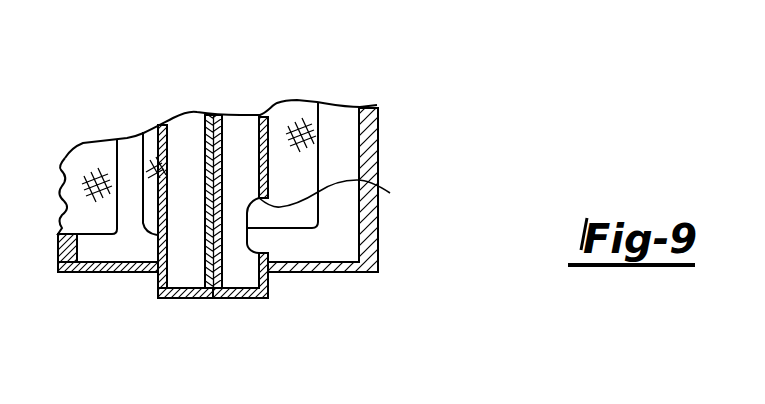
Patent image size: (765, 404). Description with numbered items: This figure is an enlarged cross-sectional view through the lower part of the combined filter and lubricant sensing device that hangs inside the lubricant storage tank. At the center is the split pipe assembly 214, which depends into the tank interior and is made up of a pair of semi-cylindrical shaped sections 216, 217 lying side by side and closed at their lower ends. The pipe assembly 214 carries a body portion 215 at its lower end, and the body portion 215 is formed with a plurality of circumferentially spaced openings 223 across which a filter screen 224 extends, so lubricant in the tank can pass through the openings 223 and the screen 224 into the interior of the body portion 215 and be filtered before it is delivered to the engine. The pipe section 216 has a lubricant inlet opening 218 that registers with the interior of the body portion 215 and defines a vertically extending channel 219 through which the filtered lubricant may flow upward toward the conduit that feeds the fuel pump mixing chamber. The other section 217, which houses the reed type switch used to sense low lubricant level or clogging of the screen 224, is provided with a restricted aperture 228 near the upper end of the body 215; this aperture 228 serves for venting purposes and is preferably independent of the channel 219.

The split pipe assembly 214 is at (268, 287).
The body portion 215 is at (379, 137).
The semi-cylindrical pipe section 216 is at (246, 299).
The semi-cylindrical pipe section 217 is at (188, 299).
The lubricant inlet opening 218 is at (341, 216).
The vertically extending channel 219 is at (239, 131).
The circumferentially spaced openings 223 is at (63, 221).
The filter screen 224 is at (97, 158).
The restricted aperture 228 is at (163, 133).